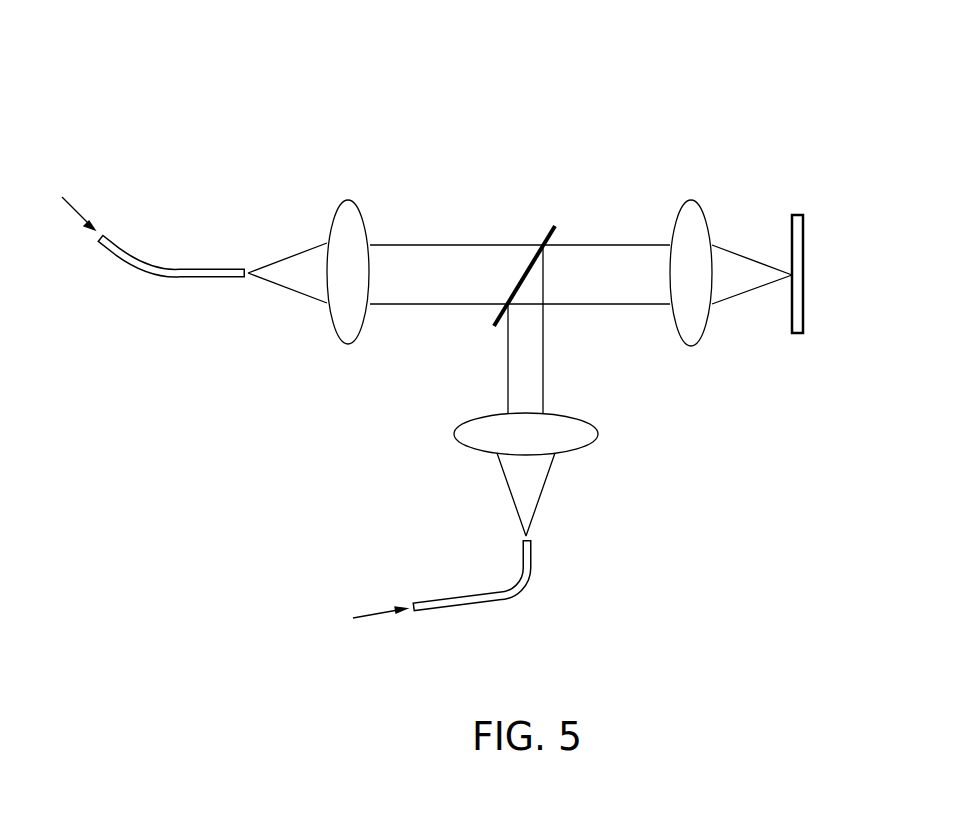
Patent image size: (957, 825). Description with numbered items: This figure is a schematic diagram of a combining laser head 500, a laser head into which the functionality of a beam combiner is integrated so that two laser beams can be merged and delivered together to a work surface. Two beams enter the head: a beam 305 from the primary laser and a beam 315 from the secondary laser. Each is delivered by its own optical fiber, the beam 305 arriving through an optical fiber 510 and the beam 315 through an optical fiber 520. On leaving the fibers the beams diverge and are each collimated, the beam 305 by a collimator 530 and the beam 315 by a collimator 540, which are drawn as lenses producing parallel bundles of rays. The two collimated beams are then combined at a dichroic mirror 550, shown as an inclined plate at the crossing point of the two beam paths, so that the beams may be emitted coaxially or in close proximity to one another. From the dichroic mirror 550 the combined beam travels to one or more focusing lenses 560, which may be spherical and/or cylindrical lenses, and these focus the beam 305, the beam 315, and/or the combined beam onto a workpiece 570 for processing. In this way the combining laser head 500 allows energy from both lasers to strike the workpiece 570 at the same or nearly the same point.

The combining laser head 500 is at (237, 113).
The beam 305 is at (70, 199).
The optical fiber 510 is at (147, 277).
The collimator 530 is at (347, 200).
The dichroic mirror 550 is at (549, 229).
The focusing lens 560 is at (689, 200).
The workpiece 570 is at (804, 240).
The collimator 540 is at (599, 431).
The optical fiber 520 is at (519, 590).
The beam 315 is at (370, 619).